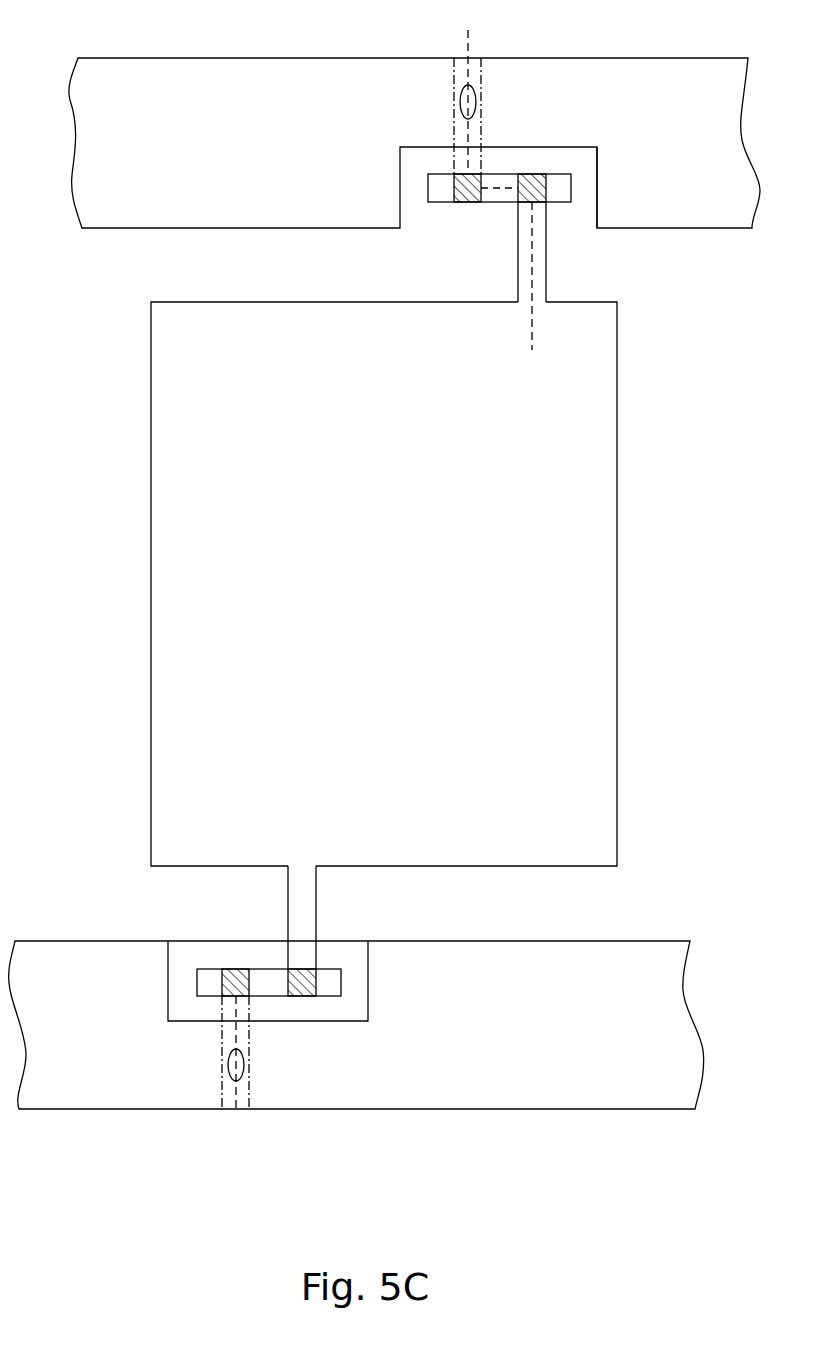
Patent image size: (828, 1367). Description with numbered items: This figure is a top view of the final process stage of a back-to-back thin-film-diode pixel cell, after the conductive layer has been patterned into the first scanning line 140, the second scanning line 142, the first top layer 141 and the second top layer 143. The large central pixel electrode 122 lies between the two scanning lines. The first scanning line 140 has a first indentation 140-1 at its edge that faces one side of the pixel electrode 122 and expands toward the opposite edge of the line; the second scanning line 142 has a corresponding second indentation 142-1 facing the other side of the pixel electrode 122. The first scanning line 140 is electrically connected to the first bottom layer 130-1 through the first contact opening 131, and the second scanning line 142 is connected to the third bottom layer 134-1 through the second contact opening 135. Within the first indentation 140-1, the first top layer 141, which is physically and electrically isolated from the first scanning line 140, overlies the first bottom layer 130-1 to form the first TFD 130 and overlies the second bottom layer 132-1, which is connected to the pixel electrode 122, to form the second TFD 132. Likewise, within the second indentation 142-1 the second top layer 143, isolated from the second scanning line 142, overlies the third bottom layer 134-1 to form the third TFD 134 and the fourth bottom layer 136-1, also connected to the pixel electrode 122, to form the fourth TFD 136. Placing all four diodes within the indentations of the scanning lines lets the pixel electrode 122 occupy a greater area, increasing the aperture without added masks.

The pixel electrode 122 is at (168, 578).
The first TFD 130 is at (464, 205).
The first bottom layer 130-1 is at (462, 165).
The first contact opening 131 is at (470, 90).
The second TFD 132 is at (547, 193).
The second bottom layer 132-1 is at (539, 260).
The third TFD 134 is at (232, 975).
The third bottom layer 134-1 is at (229, 1005).
The second contact opening 135 is at (238, 1080).
The fourth TFD 136 is at (313, 978).
The fourth bottom layer 136-1 is at (307, 908).
The first scanning line 140 is at (126, 72).
The first indentation 140-1 is at (583, 157).
The first top layer 141 is at (437, 192).
The second scanning line 142 is at (60, 1089).
The second indentation 142-1 is at (353, 1012).
The second top layer 143 is at (210, 978).